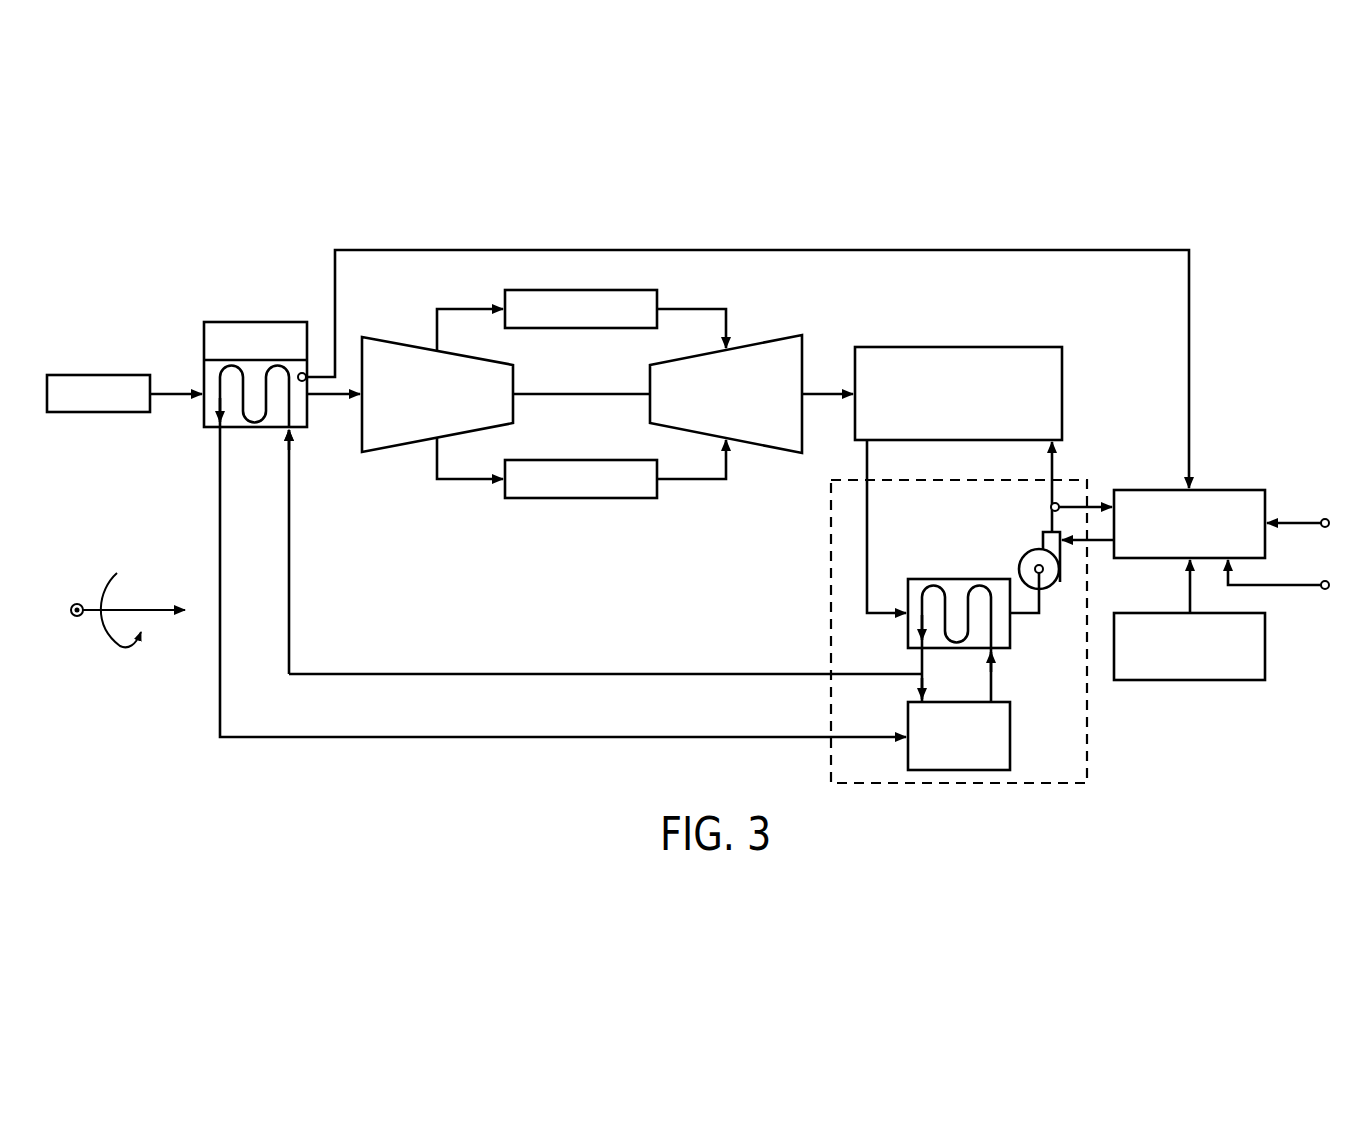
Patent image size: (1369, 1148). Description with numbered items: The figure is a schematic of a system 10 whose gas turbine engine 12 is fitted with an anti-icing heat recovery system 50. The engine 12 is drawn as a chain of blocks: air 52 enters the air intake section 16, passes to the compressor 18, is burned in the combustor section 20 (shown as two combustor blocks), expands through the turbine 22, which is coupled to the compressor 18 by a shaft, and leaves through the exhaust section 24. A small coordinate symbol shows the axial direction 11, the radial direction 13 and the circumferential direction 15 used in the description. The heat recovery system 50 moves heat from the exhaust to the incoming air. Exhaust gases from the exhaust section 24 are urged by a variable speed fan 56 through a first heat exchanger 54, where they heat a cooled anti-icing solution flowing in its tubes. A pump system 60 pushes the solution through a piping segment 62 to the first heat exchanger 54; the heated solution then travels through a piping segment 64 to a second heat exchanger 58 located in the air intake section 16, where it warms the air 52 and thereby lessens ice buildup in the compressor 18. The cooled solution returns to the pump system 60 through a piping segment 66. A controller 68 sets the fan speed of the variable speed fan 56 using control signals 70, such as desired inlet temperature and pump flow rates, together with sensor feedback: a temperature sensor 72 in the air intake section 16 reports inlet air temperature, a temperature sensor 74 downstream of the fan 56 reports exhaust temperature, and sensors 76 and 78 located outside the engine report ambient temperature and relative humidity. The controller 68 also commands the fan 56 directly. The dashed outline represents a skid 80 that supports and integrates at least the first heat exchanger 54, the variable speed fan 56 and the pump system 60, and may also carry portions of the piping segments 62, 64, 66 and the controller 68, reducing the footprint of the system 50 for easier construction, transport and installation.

The system 10 is at (168, 197).
The axial direction 11 is at (153, 608).
The gas turbine engine 12 is at (555, 530).
The radial direction 13 is at (72, 603).
The circumferential direction 15 is at (108, 638).
The air intake section 16 is at (255, 322).
The compressor 18 is at (398, 340).
The combustor section 20 is at (580, 290).
The turbine 22 is at (763, 340).
The exhaust section 24 is at (958, 347).
The anti-icing heat recovery system 50 is at (621, 745).
The air 52 is at (124, 365).
The first heat exchanger 54 is at (958, 579).
The variable speed fan 56 is at (1055, 582).
The second heat exchanger 58 is at (258, 429).
The pump system 60 is at (1012, 738).
The piping segment 62 is at (998, 681).
The piping segment 64 is at (608, 674).
The piping segment 66 is at (558, 737).
The controller 68 is at (1228, 490).
The control signals 70 is at (1265, 648).
The temperature sensor 72 is at (304, 373).
The temperature sensor 74 is at (1060, 503).
The sensor 76 is at (1322, 519).
The sensor 78 is at (1328, 589).
The skid 80 is at (829, 630).